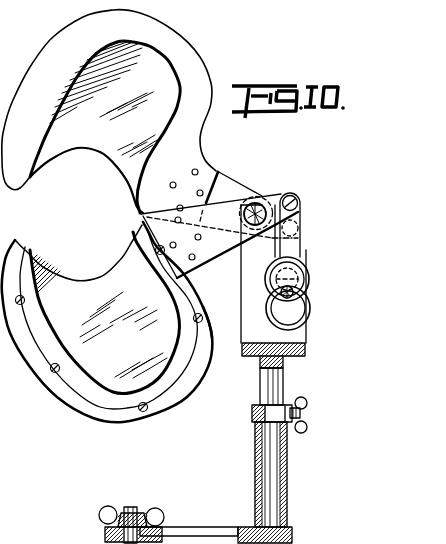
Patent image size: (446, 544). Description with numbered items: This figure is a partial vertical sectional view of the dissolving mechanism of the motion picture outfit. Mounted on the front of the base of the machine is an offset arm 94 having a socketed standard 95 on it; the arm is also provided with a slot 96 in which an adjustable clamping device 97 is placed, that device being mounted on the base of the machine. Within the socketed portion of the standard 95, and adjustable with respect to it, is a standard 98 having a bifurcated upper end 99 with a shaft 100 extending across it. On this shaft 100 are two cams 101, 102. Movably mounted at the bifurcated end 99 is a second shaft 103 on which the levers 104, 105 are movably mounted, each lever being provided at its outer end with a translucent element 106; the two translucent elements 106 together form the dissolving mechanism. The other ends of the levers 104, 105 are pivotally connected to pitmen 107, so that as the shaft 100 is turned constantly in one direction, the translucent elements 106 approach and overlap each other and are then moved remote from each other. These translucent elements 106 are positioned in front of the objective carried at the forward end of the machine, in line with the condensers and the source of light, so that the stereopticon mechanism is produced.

The offset arm 94 is at (240, 527).
The socketed standard 95 is at (285, 465).
The slot 96 is at (202, 530).
The adjustable clamping device 97 is at (135, 512).
The standard 98 is at (279, 386).
The bifurcated upper end 99 is at (245, 332).
The shaft 100 is at (291, 291).
The cam 101 is at (291, 262).
The cam 102 is at (298, 313).
The second shaft 103 is at (258, 205).
The lever 104 is at (196, 156).
The lever 105 is at (197, 304).
The translucent element 106 is at (89, 147).
The pitman 107 is at (280, 254).